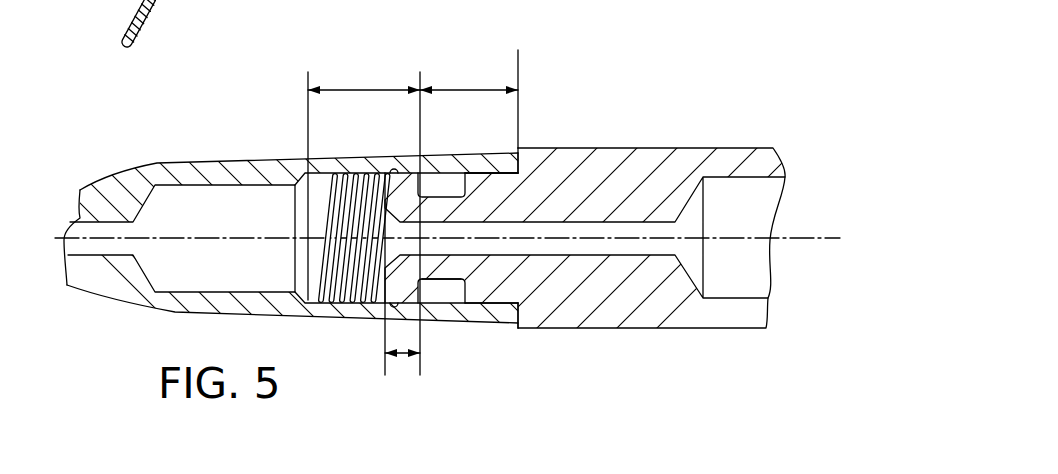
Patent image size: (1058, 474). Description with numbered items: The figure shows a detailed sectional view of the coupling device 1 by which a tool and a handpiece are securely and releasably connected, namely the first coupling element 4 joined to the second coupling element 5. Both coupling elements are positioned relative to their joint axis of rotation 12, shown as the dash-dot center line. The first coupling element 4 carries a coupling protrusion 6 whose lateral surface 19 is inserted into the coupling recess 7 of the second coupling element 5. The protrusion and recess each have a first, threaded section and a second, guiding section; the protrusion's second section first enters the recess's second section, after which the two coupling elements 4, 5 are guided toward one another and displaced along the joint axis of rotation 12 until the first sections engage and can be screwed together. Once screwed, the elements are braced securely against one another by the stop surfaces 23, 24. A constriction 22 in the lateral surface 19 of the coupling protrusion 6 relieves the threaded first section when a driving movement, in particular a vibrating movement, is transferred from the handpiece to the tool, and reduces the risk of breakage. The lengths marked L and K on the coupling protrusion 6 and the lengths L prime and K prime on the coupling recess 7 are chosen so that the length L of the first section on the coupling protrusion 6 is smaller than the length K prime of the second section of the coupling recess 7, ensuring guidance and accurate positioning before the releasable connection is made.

The coupling device 1 is at (423, 216).
The first coupling element 4 is at (505, 245).
The second coupling element 5 is at (290, 148).
The coupling protrusion 6 is at (477, 285).
The coupling recess 7 is at (452, 293).
The joint axis of rotation 12 is at (797, 238).
The lateral surface 19 is at (490, 168).
The constriction 22 is at (432, 279).
The stop surface 23 is at (517, 166).
The stop surface 24 is at (520, 317).